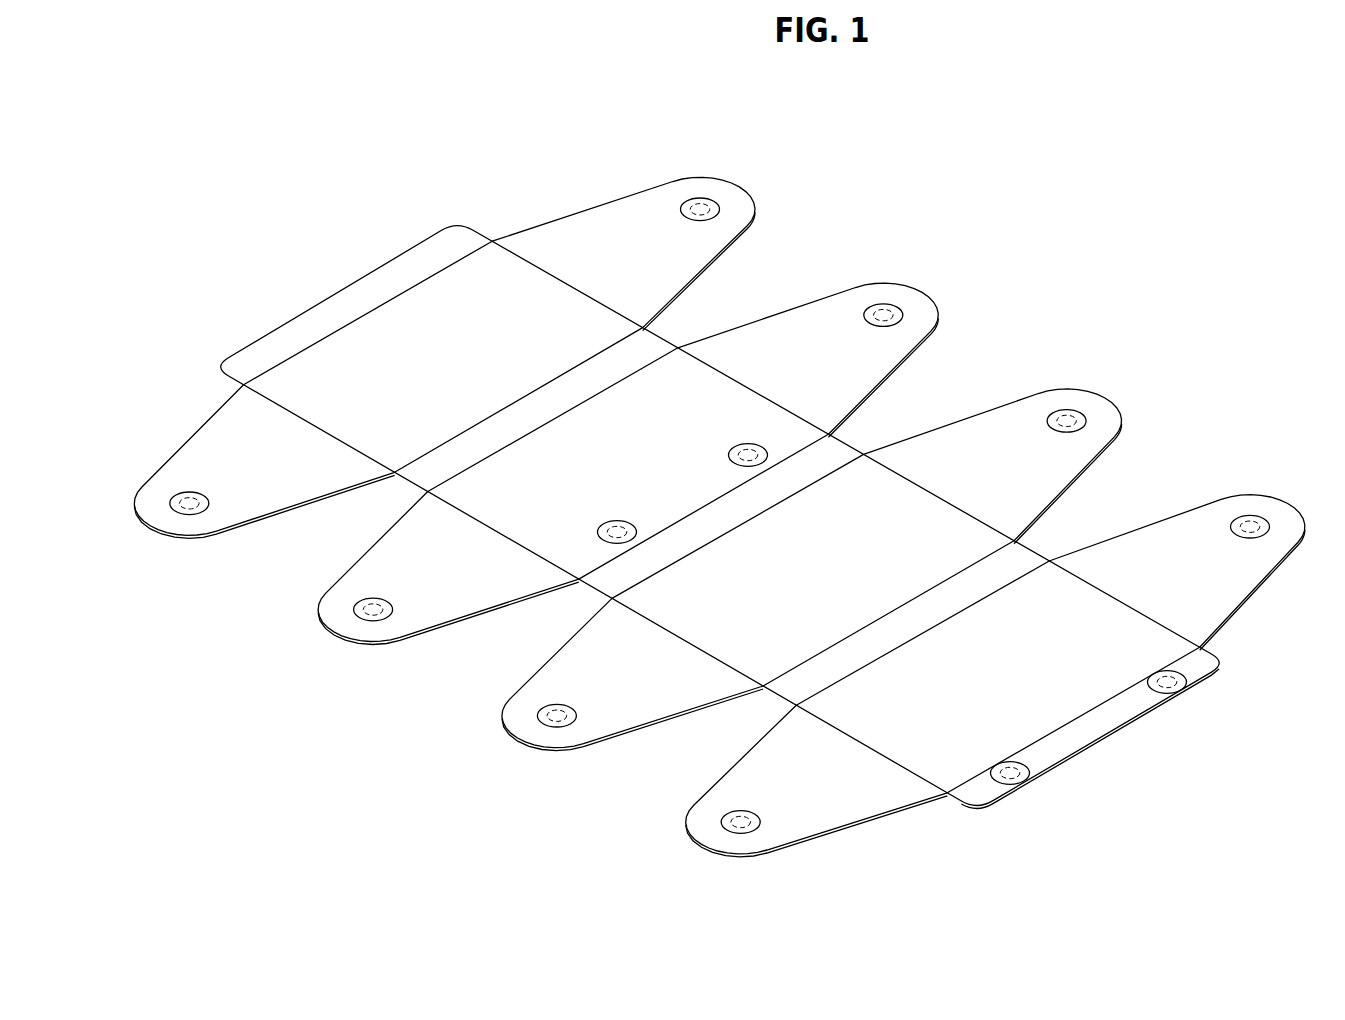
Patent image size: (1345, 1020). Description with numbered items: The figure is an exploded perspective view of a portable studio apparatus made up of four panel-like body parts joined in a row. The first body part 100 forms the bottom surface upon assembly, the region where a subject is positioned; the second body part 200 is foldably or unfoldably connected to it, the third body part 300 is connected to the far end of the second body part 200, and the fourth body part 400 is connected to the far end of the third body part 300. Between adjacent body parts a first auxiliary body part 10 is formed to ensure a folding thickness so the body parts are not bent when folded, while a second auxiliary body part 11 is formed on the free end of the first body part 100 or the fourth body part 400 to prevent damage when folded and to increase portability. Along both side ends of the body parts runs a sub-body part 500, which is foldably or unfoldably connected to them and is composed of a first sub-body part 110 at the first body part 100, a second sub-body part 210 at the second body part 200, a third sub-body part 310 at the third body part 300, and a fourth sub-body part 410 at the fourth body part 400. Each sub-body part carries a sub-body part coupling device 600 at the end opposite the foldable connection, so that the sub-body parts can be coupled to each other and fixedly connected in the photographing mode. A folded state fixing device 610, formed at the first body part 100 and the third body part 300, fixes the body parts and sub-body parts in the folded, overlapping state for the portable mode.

The sub-body part 500 is at (485, 859).
The second auxiliary body part 11 is at (376, 284).
The first auxiliary body part 10 is at (643, 347).
The fourth body part 400 is at (471, 393).
The fourth sub-body part 410 is at (744, 192).
The third body part 300 is at (633, 477).
The third sub-body part 310 is at (930, 292).
The second body part 200 is at (772, 562).
The second sub-body part 210 is at (1108, 390).
The first body part 100 is at (896, 653).
The first sub-body part 110 is at (1280, 490).
The sub-body part coupling device 600 is at (697, 197).
The folded state fixing device 610 is at (733, 450).